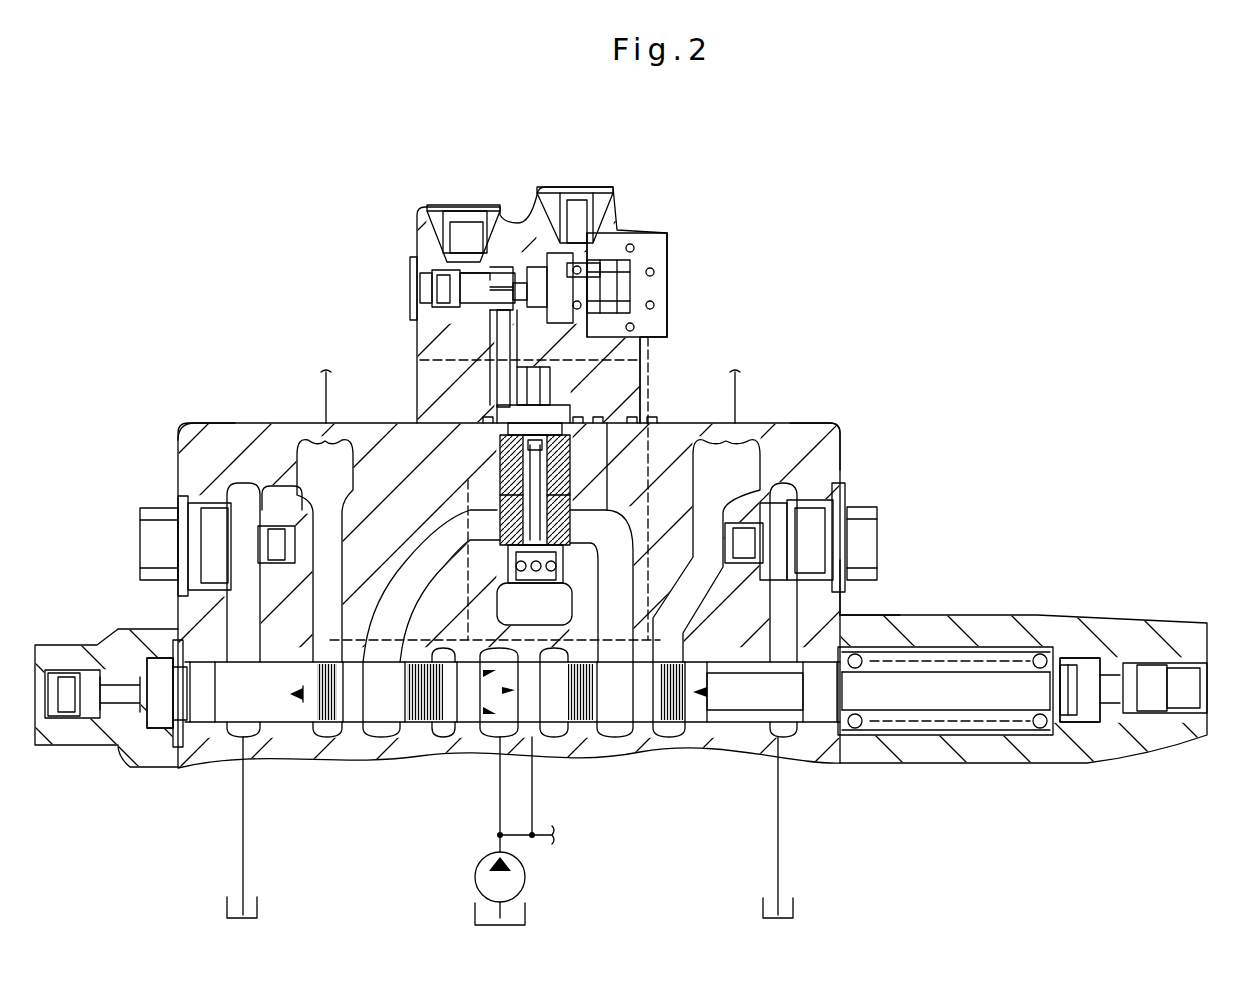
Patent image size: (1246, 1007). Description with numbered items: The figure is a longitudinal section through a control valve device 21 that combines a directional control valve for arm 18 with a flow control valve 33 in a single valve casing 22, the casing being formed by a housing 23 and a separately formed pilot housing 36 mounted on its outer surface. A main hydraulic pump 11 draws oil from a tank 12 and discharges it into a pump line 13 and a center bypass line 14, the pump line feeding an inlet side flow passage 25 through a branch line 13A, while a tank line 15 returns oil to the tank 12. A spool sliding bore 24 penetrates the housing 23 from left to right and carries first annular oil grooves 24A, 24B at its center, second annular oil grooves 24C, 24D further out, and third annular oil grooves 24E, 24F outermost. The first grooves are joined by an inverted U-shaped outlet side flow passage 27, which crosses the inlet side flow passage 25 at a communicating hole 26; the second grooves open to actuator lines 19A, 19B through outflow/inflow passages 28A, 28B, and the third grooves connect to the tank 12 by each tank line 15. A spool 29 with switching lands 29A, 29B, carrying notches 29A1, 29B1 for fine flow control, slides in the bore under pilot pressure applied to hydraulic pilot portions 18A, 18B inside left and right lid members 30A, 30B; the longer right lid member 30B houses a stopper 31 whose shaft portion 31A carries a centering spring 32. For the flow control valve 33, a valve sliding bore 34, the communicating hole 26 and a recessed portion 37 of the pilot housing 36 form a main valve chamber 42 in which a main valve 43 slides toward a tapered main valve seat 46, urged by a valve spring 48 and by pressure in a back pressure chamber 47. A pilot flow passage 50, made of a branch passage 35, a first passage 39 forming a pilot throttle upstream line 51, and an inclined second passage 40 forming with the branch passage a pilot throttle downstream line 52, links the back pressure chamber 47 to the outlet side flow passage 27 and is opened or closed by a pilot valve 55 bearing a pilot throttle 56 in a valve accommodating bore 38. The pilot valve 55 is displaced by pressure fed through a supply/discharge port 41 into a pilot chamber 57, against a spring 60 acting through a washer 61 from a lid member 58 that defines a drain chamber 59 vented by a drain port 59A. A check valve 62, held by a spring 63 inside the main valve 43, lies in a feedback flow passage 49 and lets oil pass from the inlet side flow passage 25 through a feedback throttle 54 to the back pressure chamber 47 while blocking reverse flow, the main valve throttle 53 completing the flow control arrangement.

The main hydraulic pump 11 is at (478, 885).
The tank 12 is at (262, 912).
The pump line 13 is at (517, 835).
The branch line 13A is at (535, 793).
The center bypass line 14 is at (500, 790).
The tank line 15 is at (240, 868).
The directional control valve for arm 18 is at (166, 805).
The hydraulic pilot portion 18A is at (153, 713).
The hydraulic pilot portion 18B is at (1090, 707).
The actuator line 19A is at (740, 400).
The actuator line 19B is at (328, 400).
The control valve device 21 is at (617, 517).
The valve casing 22 is at (510, 609).
The housing 23 is at (213, 423).
The spool sliding bore 24 is at (853, 737).
The first annular oil groove 24A is at (372, 738).
The first annular oil groove 24B is at (609, 738).
The second annular oil groove 24C is at (317, 737).
The second annular oil groove 24D is at (672, 738).
The third annular oil groove 24E is at (240, 738).
The third annular oil groove 24F is at (785, 738).
The inlet side flow passage 25 is at (838, 598).
The communicating hole 26 is at (865, 560).
The outlet side flow passage 27 is at (795, 540).
The outflow/inflow passage 28A is at (268, 495).
The outflow/inflow passage 28B is at (845, 612).
The spool 29 is at (415, 730).
The switching land 29A is at (298, 705).
The notch 29A1 is at (353, 725).
The switching land 29B is at (703, 728).
The notch 29B1 is at (648, 740).
The left lid member 30A is at (106, 706).
The right lid member 30B is at (1024, 700).
The stopper 31 is at (940, 697).
The shaft portion 31A is at (1003, 683).
The spring 32 is at (1070, 705).
The flow control valve 33 is at (537, 258).
The valve sliding bore 34 is at (842, 498).
The branch passage 35 is at (832, 433).
The pilot housing 36 is at (612, 222).
The recessed portion 37 is at (660, 332).
The valve accommodating bore 38 is at (540, 267).
The first passage 39 is at (465, 289).
The second passage 40 is at (671, 265).
The supply/discharge port 41 is at (455, 211).
The main valve chamber 42 is at (648, 422).
The main valve 43 is at (255, 532).
The main valve seat 46 is at (142, 545).
The back pressure chamber 47 is at (648, 392).
The valve spring 48 is at (517, 380).
The feedback flow passage 49 is at (448, 434).
The pilot flow passage 50 is at (490, 338).
The pilot throttle upstream line 51 is at (430, 285).
The pilot throttle downstream line 52 is at (640, 287).
The main valve throttle 53 is at (188, 592).
The feedback throttle 54 is at (505, 470).
The pilot valve 55 is at (480, 273).
The pilot throttle 56 is at (500, 268).
The pilot chamber 57 is at (414, 257).
The lid member 58 is at (645, 238).
The drain chamber 59 is at (668, 258).
The drain port 59A is at (566, 195).
The spring 60 is at (655, 250).
The washer 61 is at (587, 222).
The check valve 62 is at (795, 478).
The spring 63 is at (497, 395).